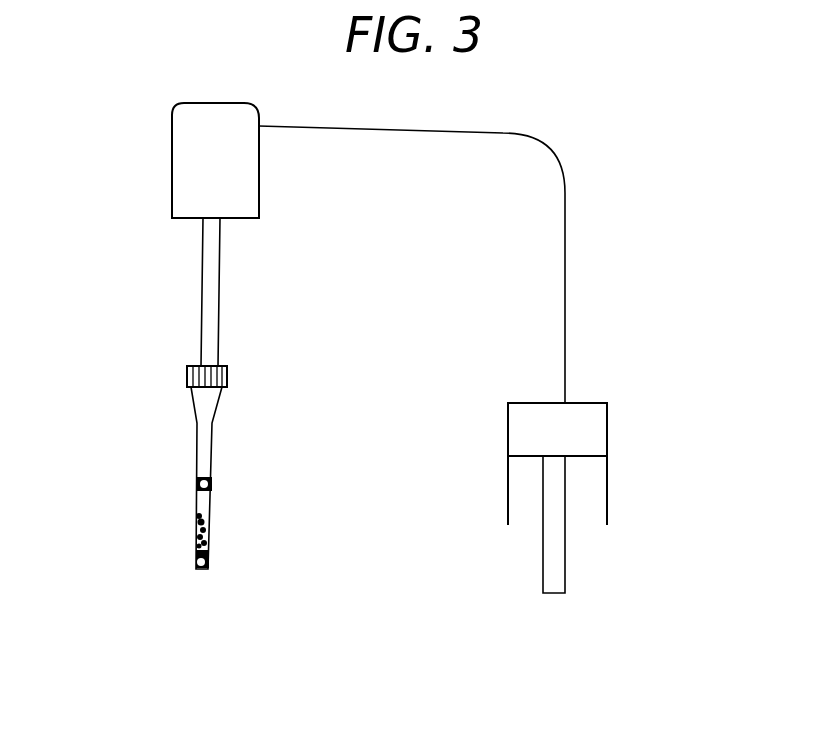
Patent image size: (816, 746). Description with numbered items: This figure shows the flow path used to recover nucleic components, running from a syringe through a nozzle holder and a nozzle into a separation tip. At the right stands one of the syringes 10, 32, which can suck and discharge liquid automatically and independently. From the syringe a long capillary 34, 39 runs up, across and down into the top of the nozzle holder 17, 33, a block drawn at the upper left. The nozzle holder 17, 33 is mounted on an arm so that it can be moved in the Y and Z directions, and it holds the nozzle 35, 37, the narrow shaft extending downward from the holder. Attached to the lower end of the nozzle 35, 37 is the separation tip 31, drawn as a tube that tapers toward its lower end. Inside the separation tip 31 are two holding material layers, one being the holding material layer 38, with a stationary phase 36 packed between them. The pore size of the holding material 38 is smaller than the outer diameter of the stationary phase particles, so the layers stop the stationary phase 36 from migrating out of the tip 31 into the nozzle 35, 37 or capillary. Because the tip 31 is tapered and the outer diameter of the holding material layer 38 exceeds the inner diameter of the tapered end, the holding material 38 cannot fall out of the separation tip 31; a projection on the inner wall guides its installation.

The nozzle holder 17 is at (160, 160).
The nozzle holder 33 is at (172, 169).
The nozzle 35 is at (265, 292).
The nozzle 37 is at (210, 286).
The separation tip 31 is at (196, 451).
The holding material layer 38 is at (212, 482).
The stationary phase 36 is at (212, 530).
The capillary 34 is at (469, 264).
The capillary 39 is at (565, 248).
The syringe 10 is at (612, 498).
The syringe 32 is at (607, 433).